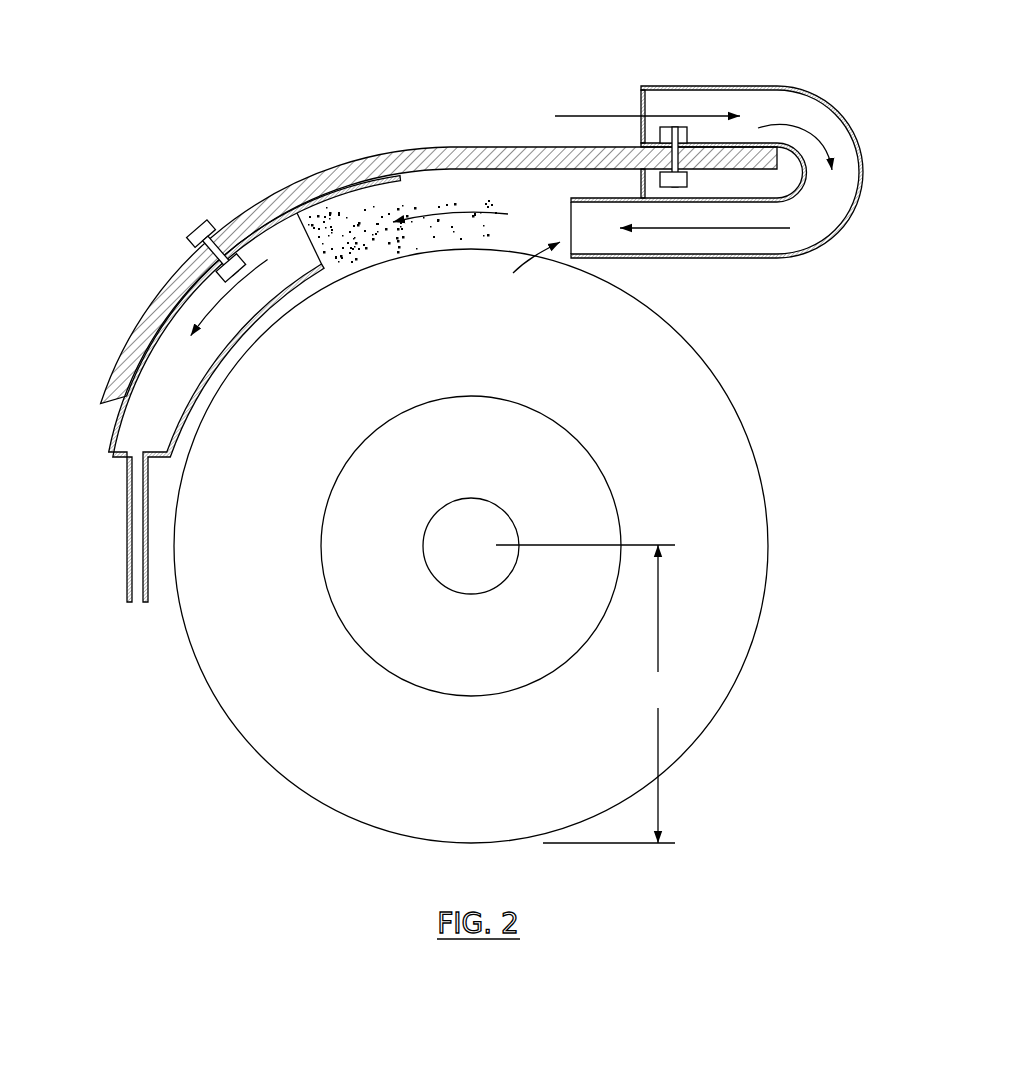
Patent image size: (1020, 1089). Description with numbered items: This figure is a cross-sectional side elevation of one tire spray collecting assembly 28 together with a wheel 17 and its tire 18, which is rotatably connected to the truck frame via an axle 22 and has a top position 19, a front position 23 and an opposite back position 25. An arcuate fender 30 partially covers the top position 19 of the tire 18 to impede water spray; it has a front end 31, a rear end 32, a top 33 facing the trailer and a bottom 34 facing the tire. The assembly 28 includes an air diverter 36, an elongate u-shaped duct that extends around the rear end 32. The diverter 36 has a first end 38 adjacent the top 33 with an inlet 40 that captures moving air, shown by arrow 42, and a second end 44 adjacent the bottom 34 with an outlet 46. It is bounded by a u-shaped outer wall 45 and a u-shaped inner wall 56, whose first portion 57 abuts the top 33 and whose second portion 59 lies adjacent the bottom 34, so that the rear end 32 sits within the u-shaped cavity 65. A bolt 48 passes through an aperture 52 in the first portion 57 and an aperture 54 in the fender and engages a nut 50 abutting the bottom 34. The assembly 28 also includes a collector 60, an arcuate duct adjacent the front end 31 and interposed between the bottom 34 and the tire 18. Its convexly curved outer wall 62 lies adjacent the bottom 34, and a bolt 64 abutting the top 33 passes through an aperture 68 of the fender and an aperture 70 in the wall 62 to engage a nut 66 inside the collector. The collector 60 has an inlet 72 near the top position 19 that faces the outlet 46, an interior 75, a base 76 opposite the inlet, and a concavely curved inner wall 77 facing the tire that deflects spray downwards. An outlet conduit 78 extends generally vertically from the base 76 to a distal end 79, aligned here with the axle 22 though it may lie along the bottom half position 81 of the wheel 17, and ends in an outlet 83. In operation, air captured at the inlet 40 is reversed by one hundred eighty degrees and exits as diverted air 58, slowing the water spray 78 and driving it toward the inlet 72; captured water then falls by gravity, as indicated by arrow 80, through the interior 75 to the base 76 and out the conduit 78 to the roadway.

The wheel 17 is at (772, 580).
The tire 18 is at (517, 388).
The top position 19 is at (512, 242).
The axle 22 is at (472, 547).
The front position 23 is at (175, 515).
The back position 25 is at (773, 495).
The tire spray collecting assembly 28 is at (137, 147).
The fender 30 is at (347, 160).
The front end of fender 31 is at (107, 407).
The rear end of fender 32 is at (783, 167).
The top of fender 33 is at (473, 146).
The bottom of fender 34 is at (398, 177).
The air diverter 36 is at (763, 84).
The first end of diverter 38 is at (641, 87).
The inlet 40 is at (628, 104).
The arrow of moving air 42 is at (582, 115).
The second end of diverter 44 is at (560, 260).
The outer wall 45 is at (747, 86).
The outlet 46 is at (525, 273).
The bolt 48 is at (688, 140).
The nut 50 is at (673, 188).
The aperture 52 is at (657, 147).
The aperture of fender 54 is at (690, 170).
The inner wall 56 is at (768, 130).
The first portion of inner wall 57 is at (728, 140).
The arrow of diverted air 58 is at (468, 222).
The second portion of inner wall 59 is at (633, 196).
The collector 60 is at (93, 436).
The outer wall of collector 62 is at (152, 362).
The bolt 64 is at (196, 240).
The u-shaped cavity 65 is at (773, 188).
The nut 66 is at (236, 281).
The aperture of fender 68 is at (226, 250).
The aperture in collector wall 70 is at (240, 240).
The inlet 72 is at (323, 266).
The interior 75 is at (152, 433).
The base 76 is at (113, 442).
The inner wall of collector 77 is at (292, 290).
The outlet conduit 78 is at (413, 228).
The distal end 79 is at (123, 601).
The arrow of water flow 80 is at (213, 313).
The bottom half position 81 is at (585, 694).
The outlet 83 is at (136, 604).